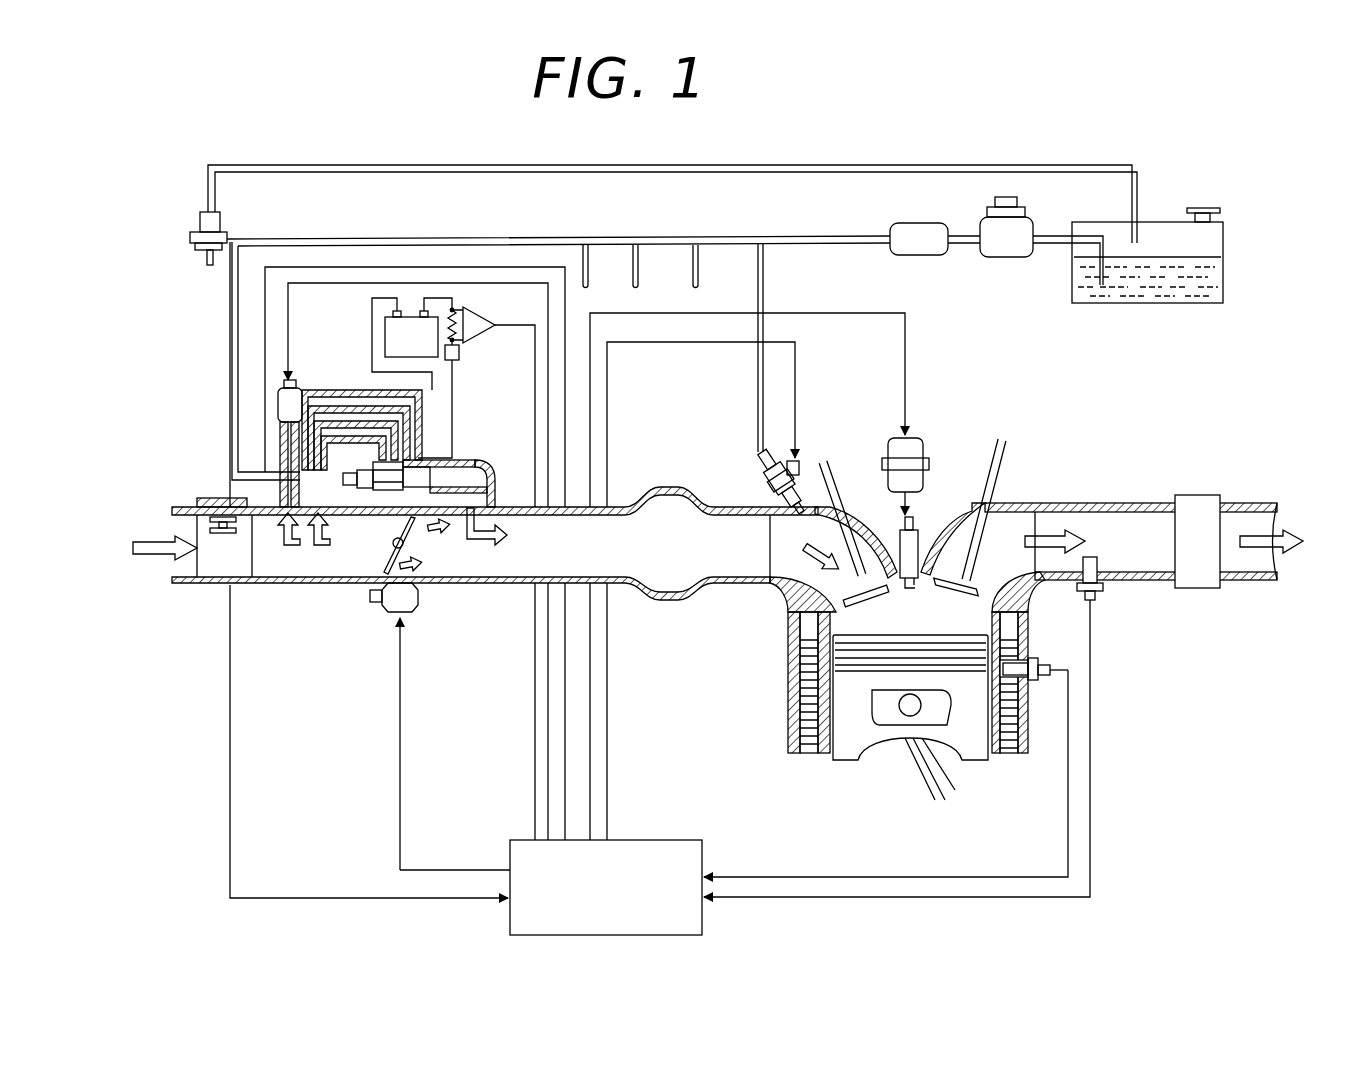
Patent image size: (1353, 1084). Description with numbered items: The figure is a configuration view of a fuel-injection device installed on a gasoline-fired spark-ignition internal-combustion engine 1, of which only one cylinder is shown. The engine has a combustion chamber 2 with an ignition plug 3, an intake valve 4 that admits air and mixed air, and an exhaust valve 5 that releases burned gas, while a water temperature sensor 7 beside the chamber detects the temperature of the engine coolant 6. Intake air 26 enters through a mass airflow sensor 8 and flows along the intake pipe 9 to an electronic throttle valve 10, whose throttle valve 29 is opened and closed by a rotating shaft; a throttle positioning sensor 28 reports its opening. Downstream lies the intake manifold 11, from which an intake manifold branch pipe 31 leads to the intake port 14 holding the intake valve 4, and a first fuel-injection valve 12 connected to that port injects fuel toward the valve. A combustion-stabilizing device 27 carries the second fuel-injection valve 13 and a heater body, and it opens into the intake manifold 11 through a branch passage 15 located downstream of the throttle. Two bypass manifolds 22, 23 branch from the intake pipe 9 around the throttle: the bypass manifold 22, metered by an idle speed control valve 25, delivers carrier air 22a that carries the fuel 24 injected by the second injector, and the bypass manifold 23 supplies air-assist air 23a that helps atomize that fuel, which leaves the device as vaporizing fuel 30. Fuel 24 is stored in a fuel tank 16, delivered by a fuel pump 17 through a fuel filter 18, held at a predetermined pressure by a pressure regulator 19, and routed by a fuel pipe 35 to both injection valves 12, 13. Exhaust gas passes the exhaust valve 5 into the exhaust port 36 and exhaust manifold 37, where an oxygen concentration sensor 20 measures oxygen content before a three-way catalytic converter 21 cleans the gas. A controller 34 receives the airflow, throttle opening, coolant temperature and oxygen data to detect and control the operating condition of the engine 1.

The internal-combustion engine 1 is at (830, 770).
The combustion chamber 2 is at (908, 615).
The ignition plug 3 is at (920, 525).
The intake valve 4 is at (833, 465).
The exhaust valve 5 is at (1003, 442).
The engine coolant 6 is at (1012, 712).
The water temperature sensor 7 is at (1050, 673).
The mass airflow sensor 8 is at (215, 585).
The intake pipe 9 is at (332, 585).
The electronic throttle valve 10 is at (410, 612).
The intake manifold 11 is at (672, 603).
The first fuel-injection valve 12 is at (762, 460).
The second fuel-injection valve 13 is at (372, 470).
The intake port 14 is at (790, 596).
The branch passage 15 is at (472, 585).
The fuel tank 16 is at (1155, 222).
The fuel pump 17 is at (1008, 198).
The fuel filter 18 is at (917, 222).
The pressure regulator 19 is at (200, 222).
The oxygen concentration sensor 20 is at (1097, 600).
The three way catalytic converter 21 is at (1195, 590).
The bypass manifold 22 is at (280, 455).
The carrier air 22a is at (283, 585).
The bypass manifold 23 is at (292, 470).
The second outlet 23a is at (316, 585).
The fuel 24 is at (1222, 272).
The idle speed control valve 25 is at (278, 400).
The intake air 26 is at (172, 528).
The combustion-stabilizing device 27 is at (482, 462).
The throttle positioning sensor 28 is at (378, 603).
The throttle valve 29 is at (405, 555).
The vaporizing fuel 30 is at (500, 585).
The intake manifold branch pipe 31 is at (742, 587).
The controller 34 is at (676, 840).
The fuel pipe 35 is at (805, 238).
The exhaust port 36 is at (1035, 503).
The exhaust manifold 37 is at (1140, 503).